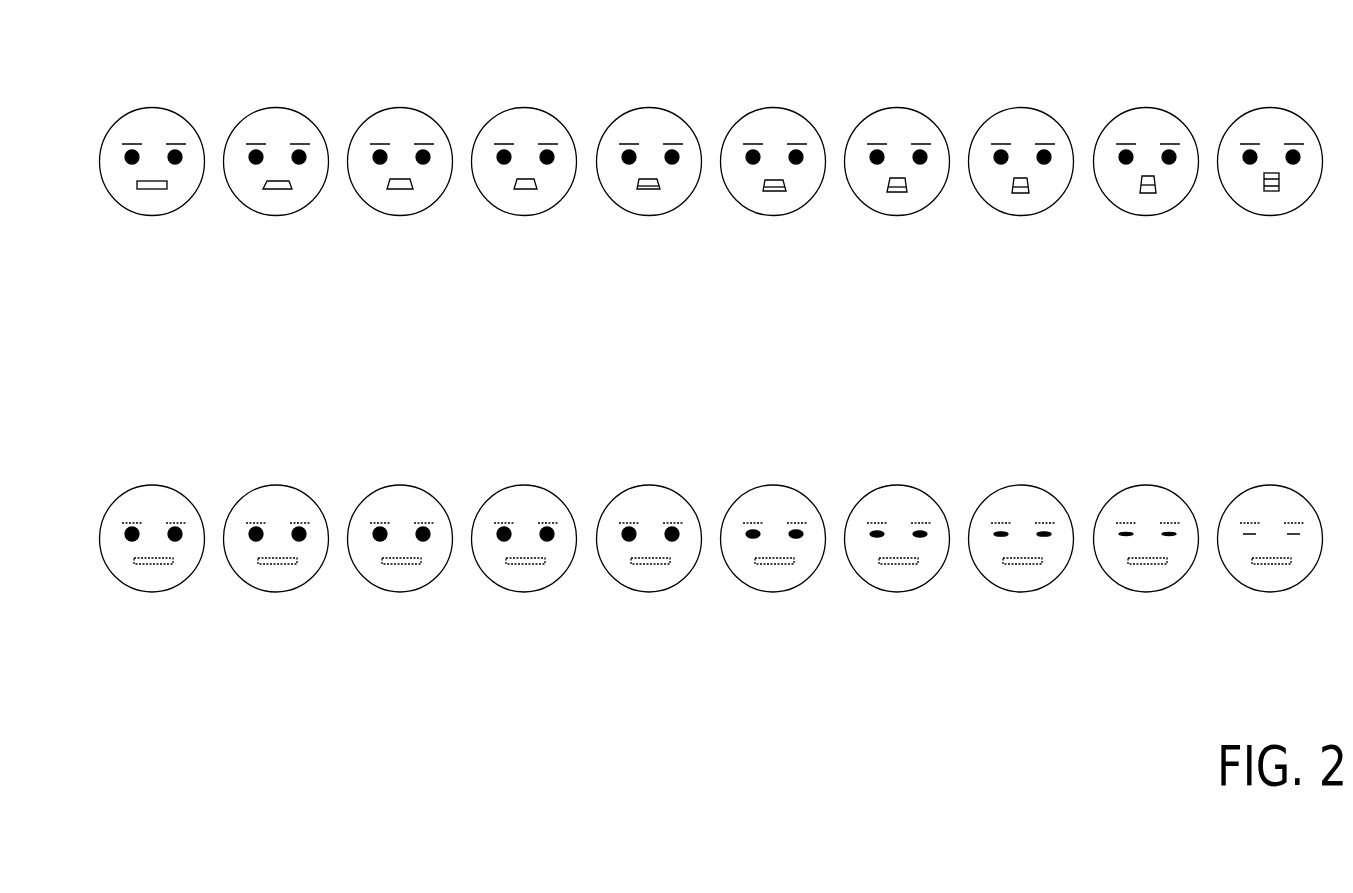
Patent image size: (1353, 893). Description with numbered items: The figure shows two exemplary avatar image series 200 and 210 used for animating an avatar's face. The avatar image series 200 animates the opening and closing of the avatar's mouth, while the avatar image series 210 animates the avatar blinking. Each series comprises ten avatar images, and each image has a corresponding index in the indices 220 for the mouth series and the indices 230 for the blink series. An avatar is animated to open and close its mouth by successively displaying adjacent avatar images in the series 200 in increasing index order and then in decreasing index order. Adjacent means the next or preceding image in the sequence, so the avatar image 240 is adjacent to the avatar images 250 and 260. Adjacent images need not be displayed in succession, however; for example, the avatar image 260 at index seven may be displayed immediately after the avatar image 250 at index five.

The avatar image series 200 is at (571, 71).
The avatar image series 210 is at (579, 451).
The indices 220 is at (434, 257).
The indices 230 is at (434, 630).
The avatar image 240 is at (765, 240).
The avatar image 250 is at (632, 240).
The avatar image 260 is at (887, 240).